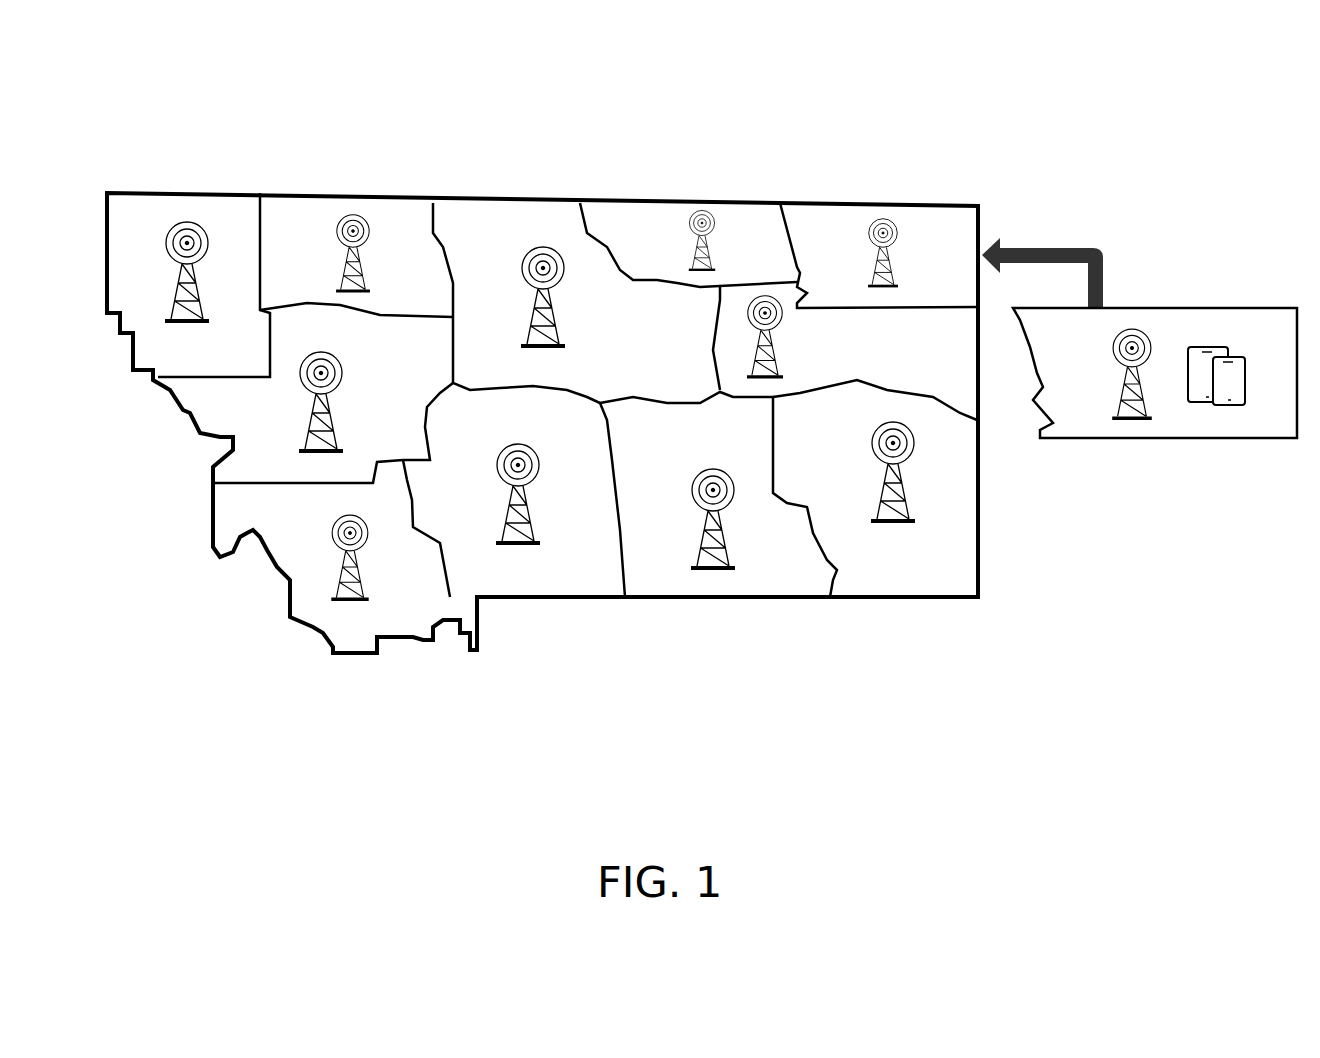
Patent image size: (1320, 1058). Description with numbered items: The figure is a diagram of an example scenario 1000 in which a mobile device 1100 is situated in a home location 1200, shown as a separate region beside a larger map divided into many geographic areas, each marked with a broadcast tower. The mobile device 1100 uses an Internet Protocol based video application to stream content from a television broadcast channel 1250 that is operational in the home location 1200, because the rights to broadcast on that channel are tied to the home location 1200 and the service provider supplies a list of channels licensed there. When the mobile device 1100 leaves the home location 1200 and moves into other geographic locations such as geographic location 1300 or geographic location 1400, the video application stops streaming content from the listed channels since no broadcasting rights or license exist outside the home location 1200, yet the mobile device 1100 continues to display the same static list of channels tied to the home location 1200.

The scenario 1000 is at (1078, 147).
The mobile device 1100 is at (1203, 373).
The home location 1200 is at (1065, 427).
The television broadcast channel 1250 is at (1133, 345).
The geographic location 1300 is at (704, 240).
The geographic location 1400 is at (883, 357).